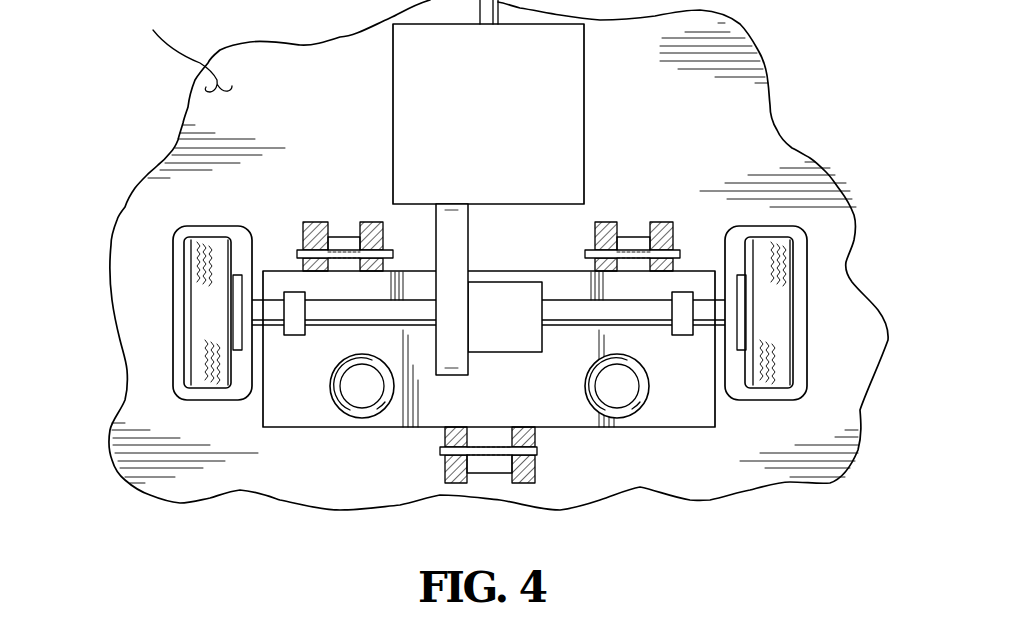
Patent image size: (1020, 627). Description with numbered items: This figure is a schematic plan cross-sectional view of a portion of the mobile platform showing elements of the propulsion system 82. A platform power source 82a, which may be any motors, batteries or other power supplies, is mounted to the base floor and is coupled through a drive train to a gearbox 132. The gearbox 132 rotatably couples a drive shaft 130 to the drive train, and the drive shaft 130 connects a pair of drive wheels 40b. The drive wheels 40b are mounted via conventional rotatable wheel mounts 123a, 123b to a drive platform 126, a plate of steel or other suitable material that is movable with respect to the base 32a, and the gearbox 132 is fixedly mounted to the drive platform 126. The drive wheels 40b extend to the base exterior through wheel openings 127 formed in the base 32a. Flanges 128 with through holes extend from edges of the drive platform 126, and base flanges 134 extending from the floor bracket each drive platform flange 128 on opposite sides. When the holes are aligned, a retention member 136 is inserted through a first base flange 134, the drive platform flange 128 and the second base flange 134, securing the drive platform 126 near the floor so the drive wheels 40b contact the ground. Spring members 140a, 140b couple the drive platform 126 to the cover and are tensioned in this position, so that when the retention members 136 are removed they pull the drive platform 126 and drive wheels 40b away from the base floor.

The base 32a is at (498, 255).
The propulsion system 82 is at (63, 210).
The platform power source 82a is at (566, 77).
The drive platform 126 is at (697, 283).
The wheel openings 127 is at (173, 368).
The drive platform flanges 128 is at (344, 237).
The drive shaft 130 is at (318, 302).
The gearbox 132 is at (535, 353).
The base flanges 134 is at (378, 222).
The retention member 136 is at (300, 254).
The rotatable wheel mount 123a is at (293, 336).
The rotatable wheel mount 123b is at (683, 336).
The spring member 140a is at (362, 419).
The spring member 140b is at (613, 419).
The drive wheels 40b is at (205, 388).